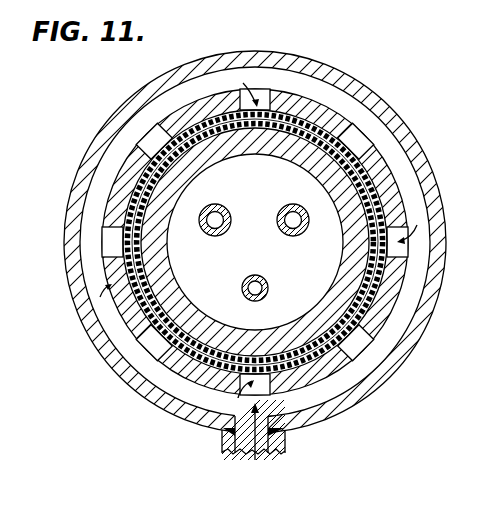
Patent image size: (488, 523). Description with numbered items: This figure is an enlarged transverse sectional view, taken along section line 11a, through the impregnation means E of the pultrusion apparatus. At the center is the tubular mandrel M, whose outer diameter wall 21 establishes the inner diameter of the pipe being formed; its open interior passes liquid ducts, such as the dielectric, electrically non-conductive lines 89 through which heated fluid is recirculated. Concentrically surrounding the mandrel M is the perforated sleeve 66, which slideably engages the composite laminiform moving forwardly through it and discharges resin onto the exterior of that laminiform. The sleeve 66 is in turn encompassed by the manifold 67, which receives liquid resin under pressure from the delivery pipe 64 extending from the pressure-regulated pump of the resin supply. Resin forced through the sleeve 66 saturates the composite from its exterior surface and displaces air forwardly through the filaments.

The manifold 67 is at (284, 54).
The impregnation means E is at (392, 109).
The sleeve 66 is at (378, 168).
The outer diameter wall 21 is at (386, 198).
The section line 11-a 11a is at (294, 113).
The mandrel M is at (296, 156).
The lines 89 is at (213, 237).
The delivery pipe 64 is at (269, 288).